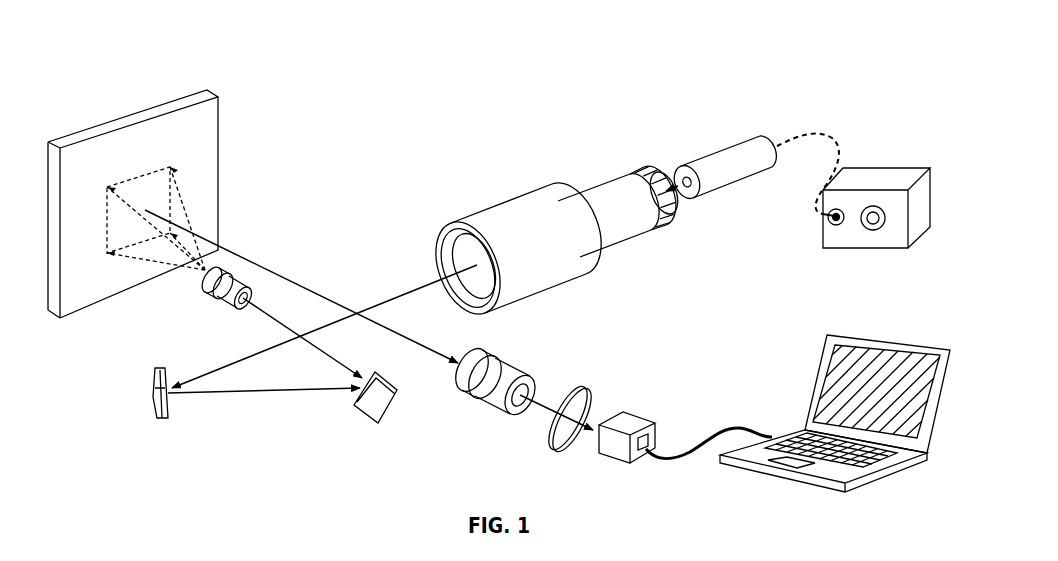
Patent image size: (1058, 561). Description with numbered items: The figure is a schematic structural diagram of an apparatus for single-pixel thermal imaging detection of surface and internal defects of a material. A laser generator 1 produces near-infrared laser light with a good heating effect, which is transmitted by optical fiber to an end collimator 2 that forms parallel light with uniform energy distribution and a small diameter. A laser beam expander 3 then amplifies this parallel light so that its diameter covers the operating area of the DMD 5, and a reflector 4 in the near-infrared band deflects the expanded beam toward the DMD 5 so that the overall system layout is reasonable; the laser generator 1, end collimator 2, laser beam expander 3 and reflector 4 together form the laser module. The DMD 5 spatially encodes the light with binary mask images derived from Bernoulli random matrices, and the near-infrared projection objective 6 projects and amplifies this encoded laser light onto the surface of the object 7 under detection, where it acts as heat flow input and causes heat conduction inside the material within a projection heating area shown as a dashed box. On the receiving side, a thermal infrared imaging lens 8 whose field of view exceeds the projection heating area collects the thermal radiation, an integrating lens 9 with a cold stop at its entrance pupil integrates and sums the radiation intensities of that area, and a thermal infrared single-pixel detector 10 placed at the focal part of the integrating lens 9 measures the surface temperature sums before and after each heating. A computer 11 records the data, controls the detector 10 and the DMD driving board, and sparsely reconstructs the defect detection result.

The laser generator 1 is at (853, 188).
The end collimator 2 is at (723, 156).
The laser beam expander 3 is at (553, 239).
The reflector 4 is at (142, 393).
The DMD 5 is at (372, 418).
The near-infrared projection objective 6 is at (226, 302).
The object under detection 7 is at (133, 194).
The thermal infrared imaging lens 8 is at (495, 376).
The integrating lens 9 is at (569, 403).
The thermal infrared single-pixel detector 10 is at (685, 424).
The computer 11 is at (835, 413).